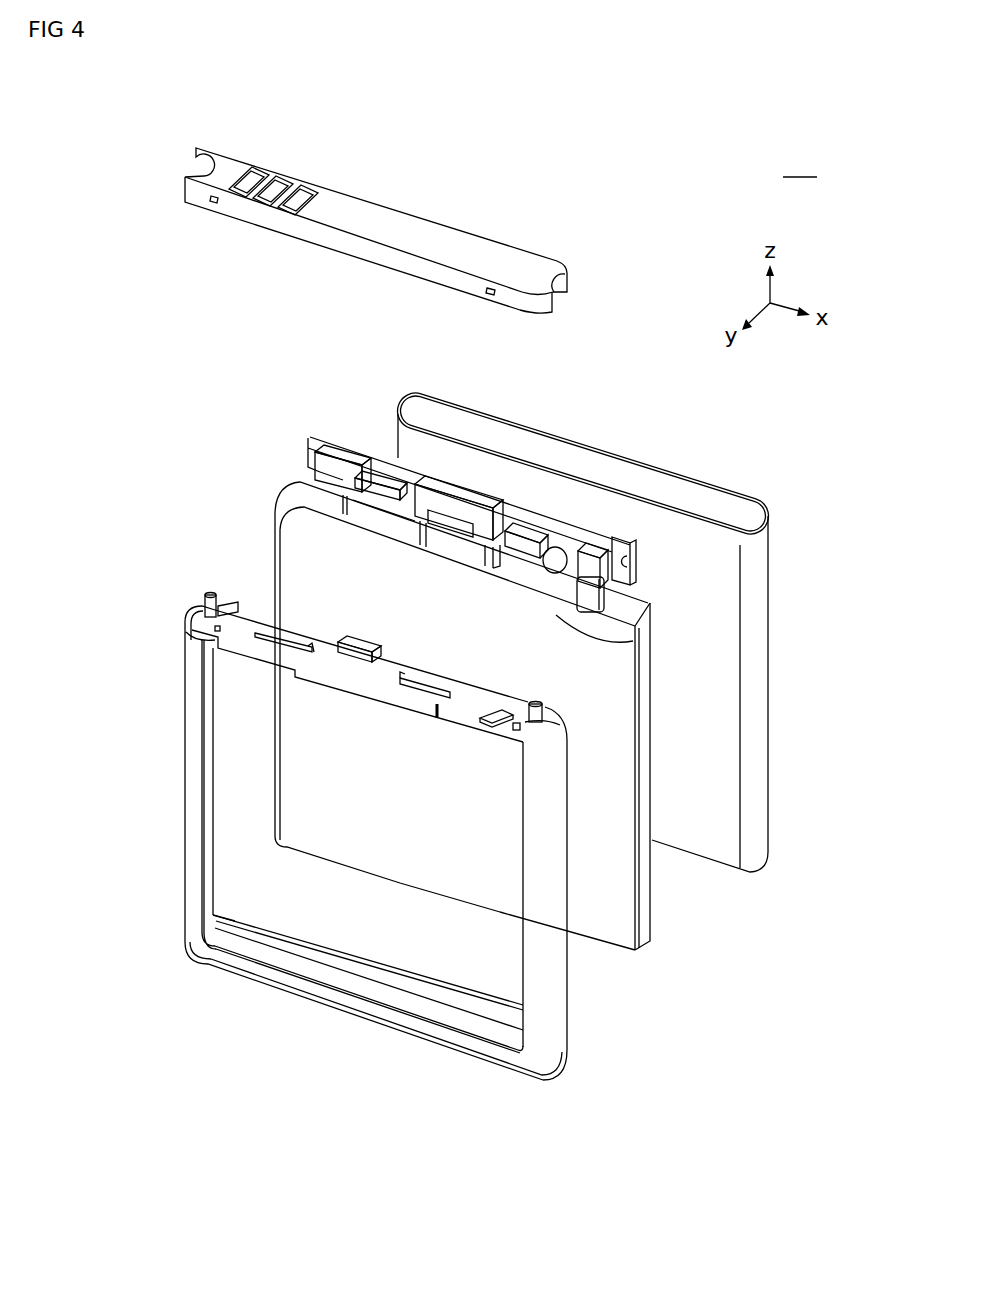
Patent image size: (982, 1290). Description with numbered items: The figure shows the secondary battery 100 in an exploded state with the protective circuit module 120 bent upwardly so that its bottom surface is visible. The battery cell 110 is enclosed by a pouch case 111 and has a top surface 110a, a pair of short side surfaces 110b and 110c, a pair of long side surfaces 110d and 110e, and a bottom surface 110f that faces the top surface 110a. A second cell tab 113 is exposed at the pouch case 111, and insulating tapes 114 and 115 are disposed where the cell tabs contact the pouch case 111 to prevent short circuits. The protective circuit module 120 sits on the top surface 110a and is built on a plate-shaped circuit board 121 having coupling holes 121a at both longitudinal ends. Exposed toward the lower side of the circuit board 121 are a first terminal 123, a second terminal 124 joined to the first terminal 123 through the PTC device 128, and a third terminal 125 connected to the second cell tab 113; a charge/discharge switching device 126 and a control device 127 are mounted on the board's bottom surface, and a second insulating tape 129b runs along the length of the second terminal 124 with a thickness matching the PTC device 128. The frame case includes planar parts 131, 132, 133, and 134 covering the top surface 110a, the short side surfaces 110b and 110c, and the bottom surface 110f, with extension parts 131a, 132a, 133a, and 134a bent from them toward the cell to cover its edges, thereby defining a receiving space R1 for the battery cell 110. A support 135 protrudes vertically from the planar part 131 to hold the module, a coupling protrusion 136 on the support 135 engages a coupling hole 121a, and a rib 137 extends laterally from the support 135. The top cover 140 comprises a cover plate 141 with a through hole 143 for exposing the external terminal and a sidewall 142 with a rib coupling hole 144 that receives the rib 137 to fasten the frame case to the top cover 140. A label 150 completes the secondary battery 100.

The secondary battery 100 is at (800, 164).
The battery cell 110 is at (477, 736).
The top surface 110a is at (290, 522).
The short side surface 110b is at (643, 748).
The short side surface 110c is at (273, 760).
The long side surface 110d is at (593, 934).
The long side surface 110e is at (650, 887).
The bottom surface 110f is at (413, 888).
The pouch case 111 is at (652, 600).
The second cell tab 113 is at (380, 494).
The insulating tape 114 is at (500, 566).
The insulating tape 115 is at (387, 508).
The protective circuit module 120 is at (467, 535).
The circuit board 121 is at (309, 443).
The coupling hole 121a is at (630, 566).
The first terminal 123 is at (523, 540).
The second terminal 124 is at (594, 551).
The third terminal 125 is at (388, 480).
The charge/discharge switching device 126 is at (457, 512).
The control device 127 is at (340, 458).
The PTC device 128 is at (557, 548).
The second insulating tape 129b is at (590, 614).
The planar part 131 is at (360, 695).
The extension part 131a is at (394, 704).
The planar part 132 is at (417, 893).
The extension part 132a is at (537, 950).
The planar part 133 is at (187, 762).
The extension part 133a is at (194, 840).
The planar part 134 is at (364, 1003).
The extension part 134a is at (300, 983).
The support 135 is at (357, 658).
The coupling protrusion 136 is at (556, 702).
The rib 137 is at (515, 733).
The top cover 140 is at (387, 215).
The cover plate 141 is at (371, 205).
The sidewall 142 is at (352, 250).
The through hole 143 is at (264, 162).
The rib coupling hole 144 is at (487, 291).
The label 150 is at (735, 474).
The receiving space R1 is at (272, 906).